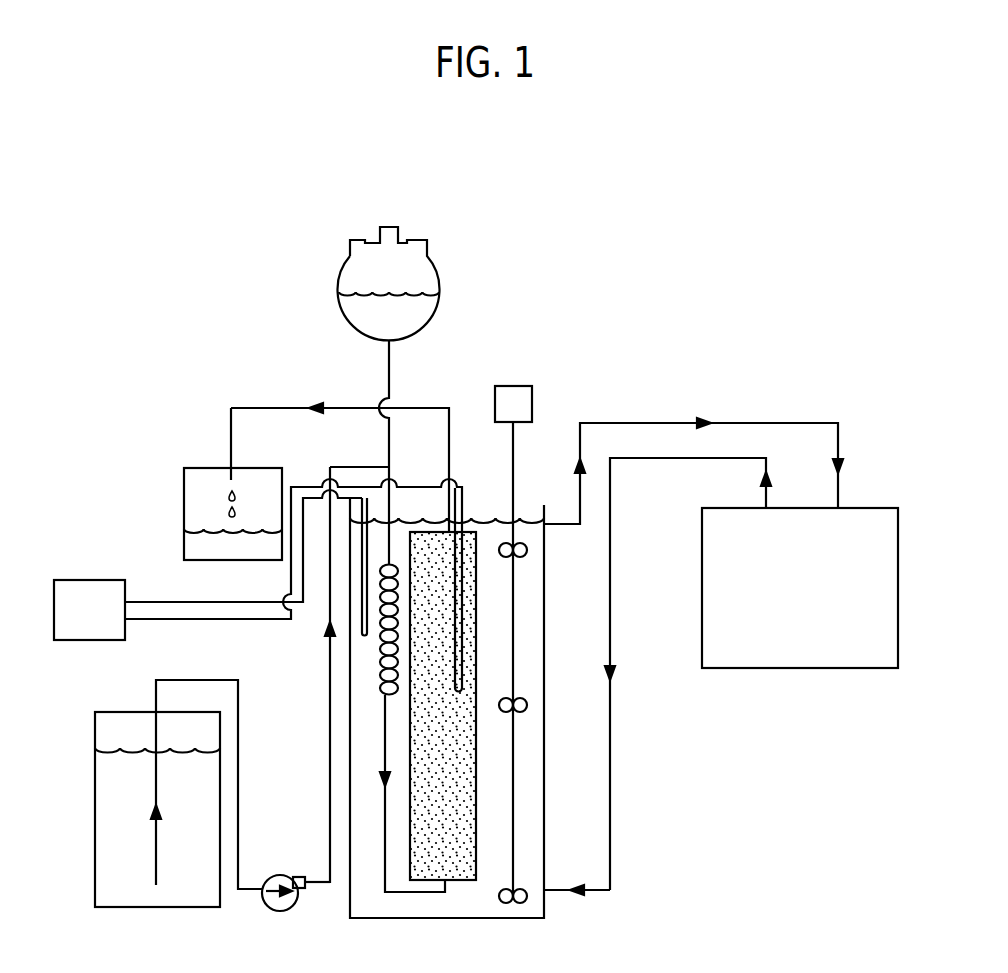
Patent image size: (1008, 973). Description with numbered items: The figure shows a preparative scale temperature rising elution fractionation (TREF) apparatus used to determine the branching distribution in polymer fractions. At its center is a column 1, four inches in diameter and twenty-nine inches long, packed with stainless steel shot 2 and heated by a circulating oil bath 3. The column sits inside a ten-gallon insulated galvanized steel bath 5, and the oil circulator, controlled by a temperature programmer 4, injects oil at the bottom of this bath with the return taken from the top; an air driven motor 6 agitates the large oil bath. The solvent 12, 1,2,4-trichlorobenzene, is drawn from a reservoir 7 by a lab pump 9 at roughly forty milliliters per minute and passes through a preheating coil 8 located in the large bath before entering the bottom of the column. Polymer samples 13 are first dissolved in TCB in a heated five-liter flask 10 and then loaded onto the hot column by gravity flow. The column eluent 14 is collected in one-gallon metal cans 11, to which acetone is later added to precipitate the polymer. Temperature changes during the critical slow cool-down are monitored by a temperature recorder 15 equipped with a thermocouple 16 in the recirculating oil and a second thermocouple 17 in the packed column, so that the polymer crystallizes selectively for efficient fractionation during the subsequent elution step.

The column 1 is at (478, 782).
The stainless steel shot 2 is at (462, 879).
The circulating oil bath 3 is at (520, 858).
The temperature programmer 4 is at (853, 670).
The insulated bath 5 is at (545, 911).
The air driven motor 6 is at (533, 396).
The reservoir 7 is at (95, 865).
The preheating coil 8 is at (380, 662).
The lab pump 9 is at (283, 911).
The heated flask 10 is at (441, 267).
The metal cans 11 is at (184, 488).
The solvent 12 is at (132, 890).
The polymer samples 13 is at (425, 306).
The column eluent 14 is at (195, 545).
The temperature recorder 15 is at (82, 591).
The thermocouple 16 is at (362, 604).
The thermocouple 17 is at (462, 606).